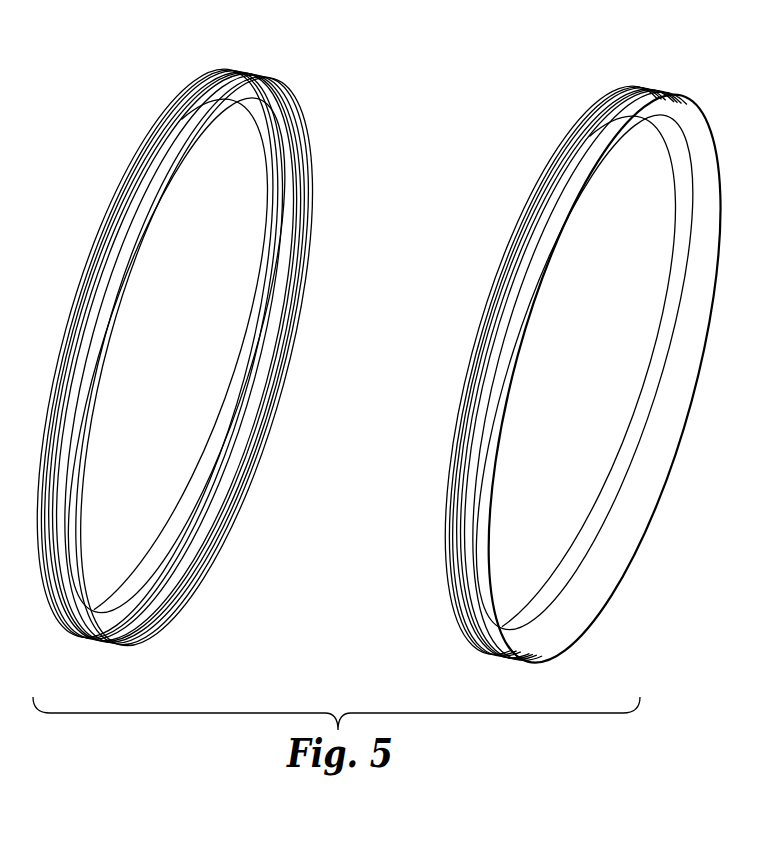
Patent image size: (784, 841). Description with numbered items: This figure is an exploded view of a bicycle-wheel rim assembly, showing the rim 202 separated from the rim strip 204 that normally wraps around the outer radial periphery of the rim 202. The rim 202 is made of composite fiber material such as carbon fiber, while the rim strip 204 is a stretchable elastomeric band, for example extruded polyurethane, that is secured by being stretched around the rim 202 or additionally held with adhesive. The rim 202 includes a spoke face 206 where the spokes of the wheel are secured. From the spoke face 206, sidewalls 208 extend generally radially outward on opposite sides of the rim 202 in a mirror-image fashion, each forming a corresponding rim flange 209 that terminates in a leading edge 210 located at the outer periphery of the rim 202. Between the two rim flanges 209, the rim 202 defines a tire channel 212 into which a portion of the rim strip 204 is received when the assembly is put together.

The rim 202 is at (597, 366).
The rim strip 204 is at (290, 88).
The spoke face 206 is at (670, 353).
The sidewalls 208 is at (682, 118).
The rim flange 209 is at (507, 280).
The leading edge 210 is at (600, 103).
The tire channel 212 is at (543, 227).